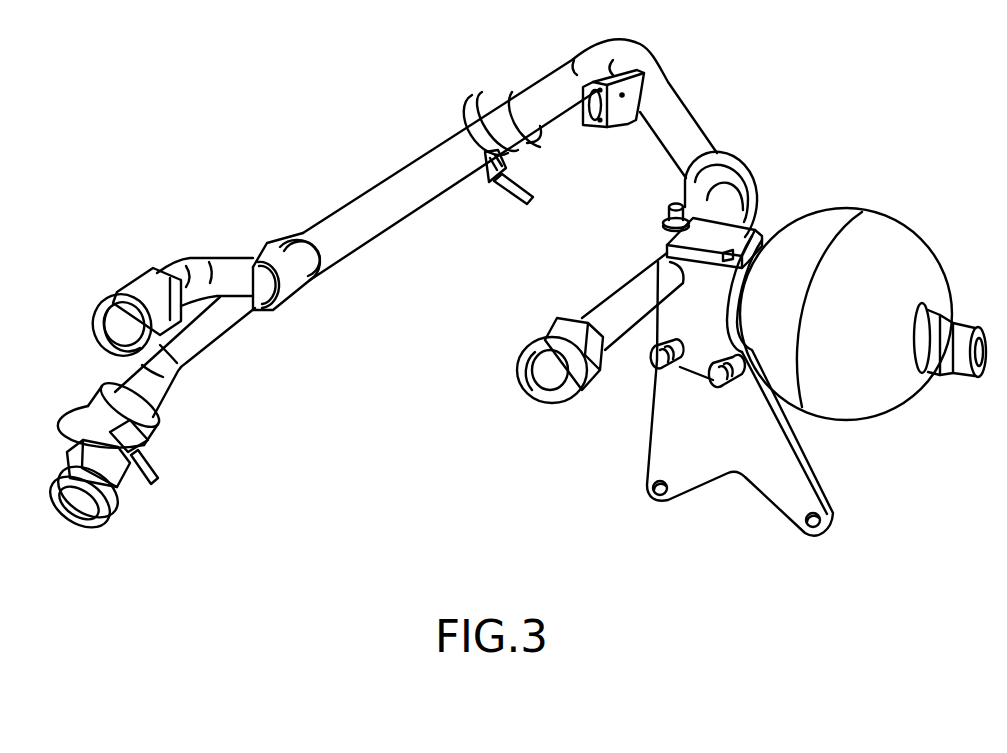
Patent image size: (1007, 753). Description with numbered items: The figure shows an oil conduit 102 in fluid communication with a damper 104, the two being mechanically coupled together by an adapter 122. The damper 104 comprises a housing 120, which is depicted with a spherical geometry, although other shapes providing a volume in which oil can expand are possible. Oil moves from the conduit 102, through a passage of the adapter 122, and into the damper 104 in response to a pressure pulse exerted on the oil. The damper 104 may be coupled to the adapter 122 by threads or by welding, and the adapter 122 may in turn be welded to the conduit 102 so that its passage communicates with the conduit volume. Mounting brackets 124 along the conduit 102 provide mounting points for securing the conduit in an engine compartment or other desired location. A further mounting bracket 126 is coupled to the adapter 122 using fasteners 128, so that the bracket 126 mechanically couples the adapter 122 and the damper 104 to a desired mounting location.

The conduit 102 is at (694, 137).
The damper 104 is at (863, 323).
The housing 120 is at (877, 403).
The adapter 122 is at (752, 232).
The mounting brackets 124 is at (480, 117).
The mounting bracket 126 is at (700, 477).
The fasteners 128 is at (657, 368).